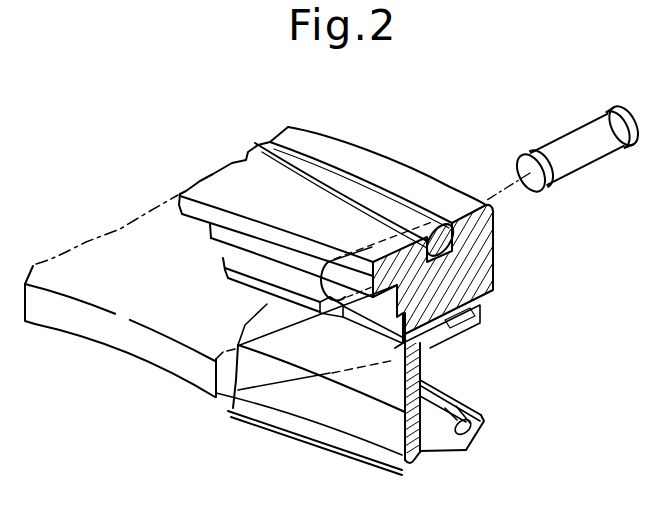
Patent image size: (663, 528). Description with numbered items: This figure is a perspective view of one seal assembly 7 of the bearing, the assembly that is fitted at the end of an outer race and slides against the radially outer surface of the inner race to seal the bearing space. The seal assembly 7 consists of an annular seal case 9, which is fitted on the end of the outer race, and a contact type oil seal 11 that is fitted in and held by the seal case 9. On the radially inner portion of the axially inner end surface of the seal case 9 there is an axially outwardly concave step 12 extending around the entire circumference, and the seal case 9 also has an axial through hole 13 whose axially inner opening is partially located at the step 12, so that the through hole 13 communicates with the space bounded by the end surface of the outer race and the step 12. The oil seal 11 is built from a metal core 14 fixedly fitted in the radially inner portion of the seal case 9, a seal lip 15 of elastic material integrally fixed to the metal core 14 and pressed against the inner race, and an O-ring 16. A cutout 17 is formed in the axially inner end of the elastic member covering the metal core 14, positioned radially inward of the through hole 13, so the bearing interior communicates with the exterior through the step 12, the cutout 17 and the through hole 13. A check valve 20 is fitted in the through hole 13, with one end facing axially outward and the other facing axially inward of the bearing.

The seal assembly 7 is at (432, 173).
The seal case 9 is at (308, 137).
The contact type oil seal 11 is at (420, 370).
The step 12 is at (222, 262).
The through hole 13 is at (395, 228).
The metal core 14 is at (393, 381).
The seal lip 15 is at (443, 449).
The O-ring 16 is at (462, 405).
The cutout 17 is at (320, 318).
The check valve 20 is at (553, 136).